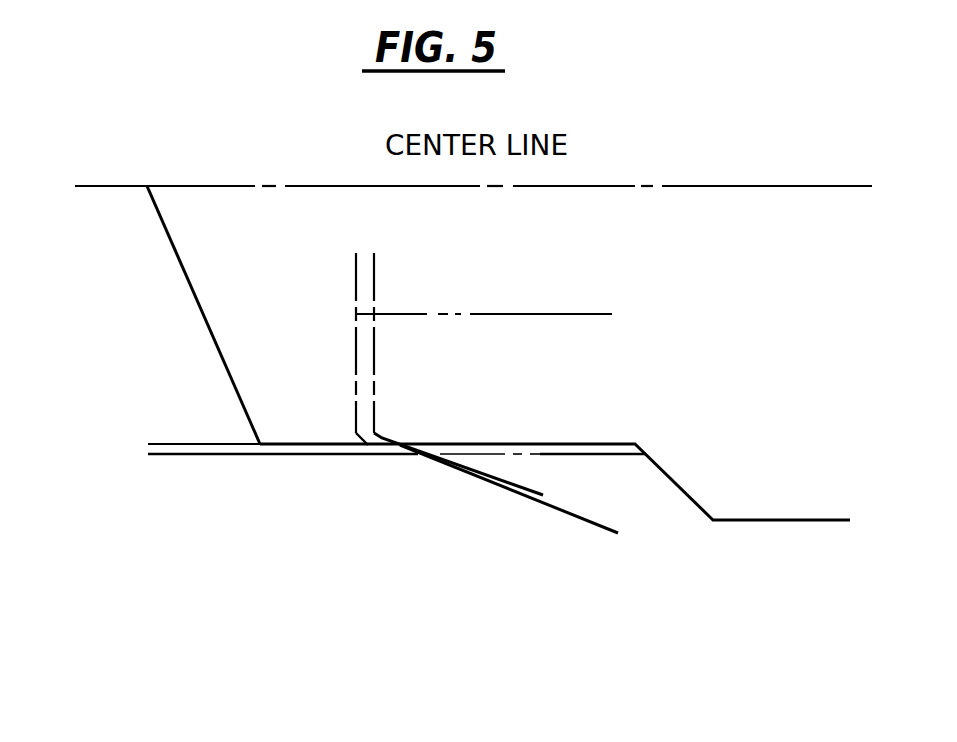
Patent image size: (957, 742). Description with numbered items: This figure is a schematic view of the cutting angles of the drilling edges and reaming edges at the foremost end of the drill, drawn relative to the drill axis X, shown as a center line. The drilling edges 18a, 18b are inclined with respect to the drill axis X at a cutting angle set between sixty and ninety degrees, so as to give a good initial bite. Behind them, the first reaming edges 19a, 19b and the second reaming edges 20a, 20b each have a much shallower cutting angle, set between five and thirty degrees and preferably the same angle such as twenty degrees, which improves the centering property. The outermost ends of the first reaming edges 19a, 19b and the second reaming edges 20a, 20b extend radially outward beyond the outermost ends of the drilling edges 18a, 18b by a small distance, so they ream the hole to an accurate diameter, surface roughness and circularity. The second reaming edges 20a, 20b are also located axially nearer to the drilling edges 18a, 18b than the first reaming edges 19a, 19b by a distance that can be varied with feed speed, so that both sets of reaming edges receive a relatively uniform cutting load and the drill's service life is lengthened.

The drilling edge 18a is at (146, 315).
The drilling edge 18b is at (197, 303).
The first reaming edge 19a is at (494, 490).
The first reaming edge 19b is at (383, 450).
The second reaming edge 20a is at (499, 482).
The second reaming edge 20b is at (362, 447).
The drill axis X is at (103, 186).